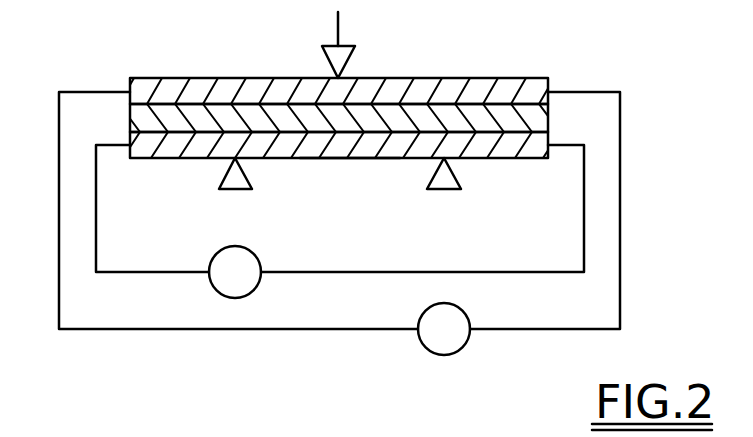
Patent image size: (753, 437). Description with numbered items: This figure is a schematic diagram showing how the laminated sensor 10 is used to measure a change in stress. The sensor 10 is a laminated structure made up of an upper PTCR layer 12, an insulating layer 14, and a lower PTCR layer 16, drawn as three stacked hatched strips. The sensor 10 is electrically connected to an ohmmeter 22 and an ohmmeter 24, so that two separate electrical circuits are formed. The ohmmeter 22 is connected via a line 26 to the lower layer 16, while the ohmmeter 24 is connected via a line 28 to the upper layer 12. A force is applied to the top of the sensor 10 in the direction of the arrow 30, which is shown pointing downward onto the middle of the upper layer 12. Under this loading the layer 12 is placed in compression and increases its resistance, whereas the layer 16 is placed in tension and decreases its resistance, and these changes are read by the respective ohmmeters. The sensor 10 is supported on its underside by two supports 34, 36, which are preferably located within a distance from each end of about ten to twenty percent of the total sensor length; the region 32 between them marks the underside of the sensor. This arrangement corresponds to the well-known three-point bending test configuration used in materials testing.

The sensor 10 is at (196, 45).
The PTCR layer 12 is at (549, 80).
The insulating layer 14 is at (552, 106).
The PTCR layer 16 is at (553, 141).
The ohmmeter 22 is at (258, 291).
The ohmmeter 24 is at (419, 316).
The line 26 is at (584, 233).
The line 28 is at (621, 238).
The arrow 30 is at (351, 62).
The bottom surface of laminate 32 is at (345, 160).
The second support 34 is at (445, 191).
The first support 36 is at (233, 190).